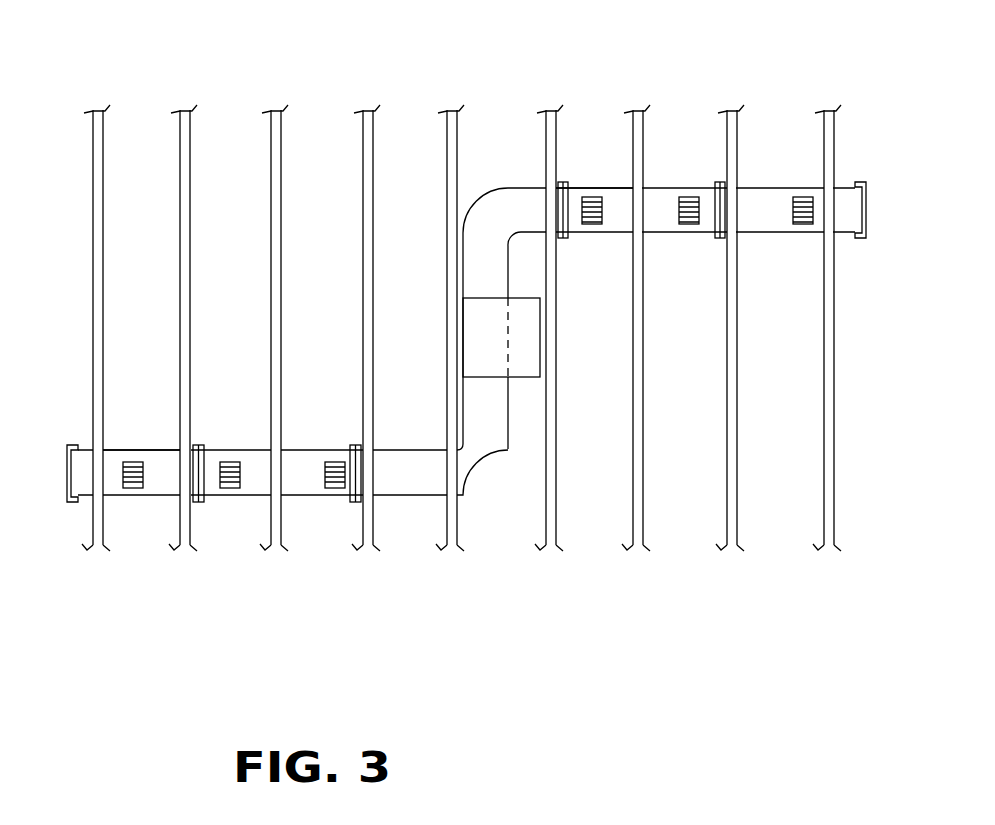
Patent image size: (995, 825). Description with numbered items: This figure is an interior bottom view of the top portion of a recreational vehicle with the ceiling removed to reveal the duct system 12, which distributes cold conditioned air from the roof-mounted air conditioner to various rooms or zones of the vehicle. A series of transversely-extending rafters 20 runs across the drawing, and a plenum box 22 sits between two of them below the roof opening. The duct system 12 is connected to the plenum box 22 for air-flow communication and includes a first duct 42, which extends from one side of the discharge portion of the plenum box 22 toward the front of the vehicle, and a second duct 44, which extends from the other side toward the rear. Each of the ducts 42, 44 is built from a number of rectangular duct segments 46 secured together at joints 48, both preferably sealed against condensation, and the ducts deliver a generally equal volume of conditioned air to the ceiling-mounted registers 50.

The duct system 12 is at (422, 382).
The rafters 20 is at (548, 133).
The plenum box 22 is at (530, 373).
The first duct 42 is at (762, 232).
The second duct 44 is at (147, 450).
The duct segments 46 is at (253, 457).
The joints 48 is at (200, 502).
The registers 50 is at (133, 488).